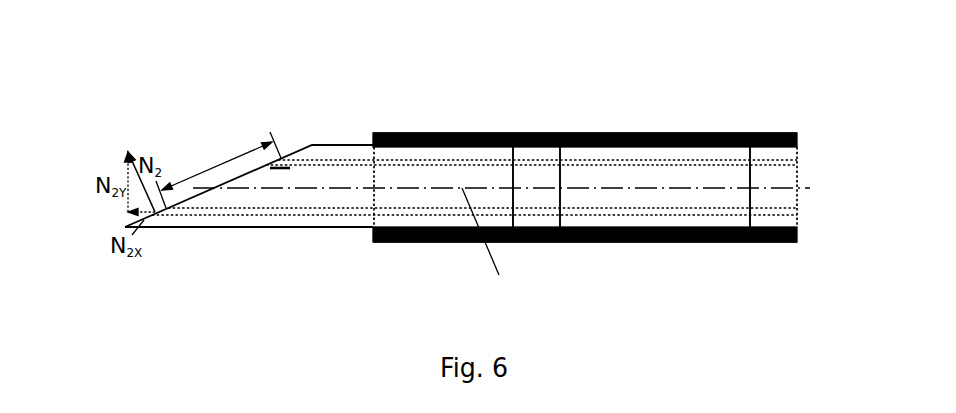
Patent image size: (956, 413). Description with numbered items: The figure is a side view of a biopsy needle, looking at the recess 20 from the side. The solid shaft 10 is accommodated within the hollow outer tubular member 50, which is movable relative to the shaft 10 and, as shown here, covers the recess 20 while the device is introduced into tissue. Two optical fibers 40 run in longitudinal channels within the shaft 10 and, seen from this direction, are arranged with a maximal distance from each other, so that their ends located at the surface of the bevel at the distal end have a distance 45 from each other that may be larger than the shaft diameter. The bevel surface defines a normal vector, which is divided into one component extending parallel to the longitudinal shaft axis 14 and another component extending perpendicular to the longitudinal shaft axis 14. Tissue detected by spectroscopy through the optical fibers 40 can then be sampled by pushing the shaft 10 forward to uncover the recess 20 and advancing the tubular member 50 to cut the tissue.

The shaft 10 is at (298, 193).
The longitudinal shaft axis 14 is at (462, 188).
The optical fibers 40 is at (362, 163).
The recess 20 is at (642, 175).
The outer tubular member 50 is at (457, 133).
The distance 45 is at (218, 170).